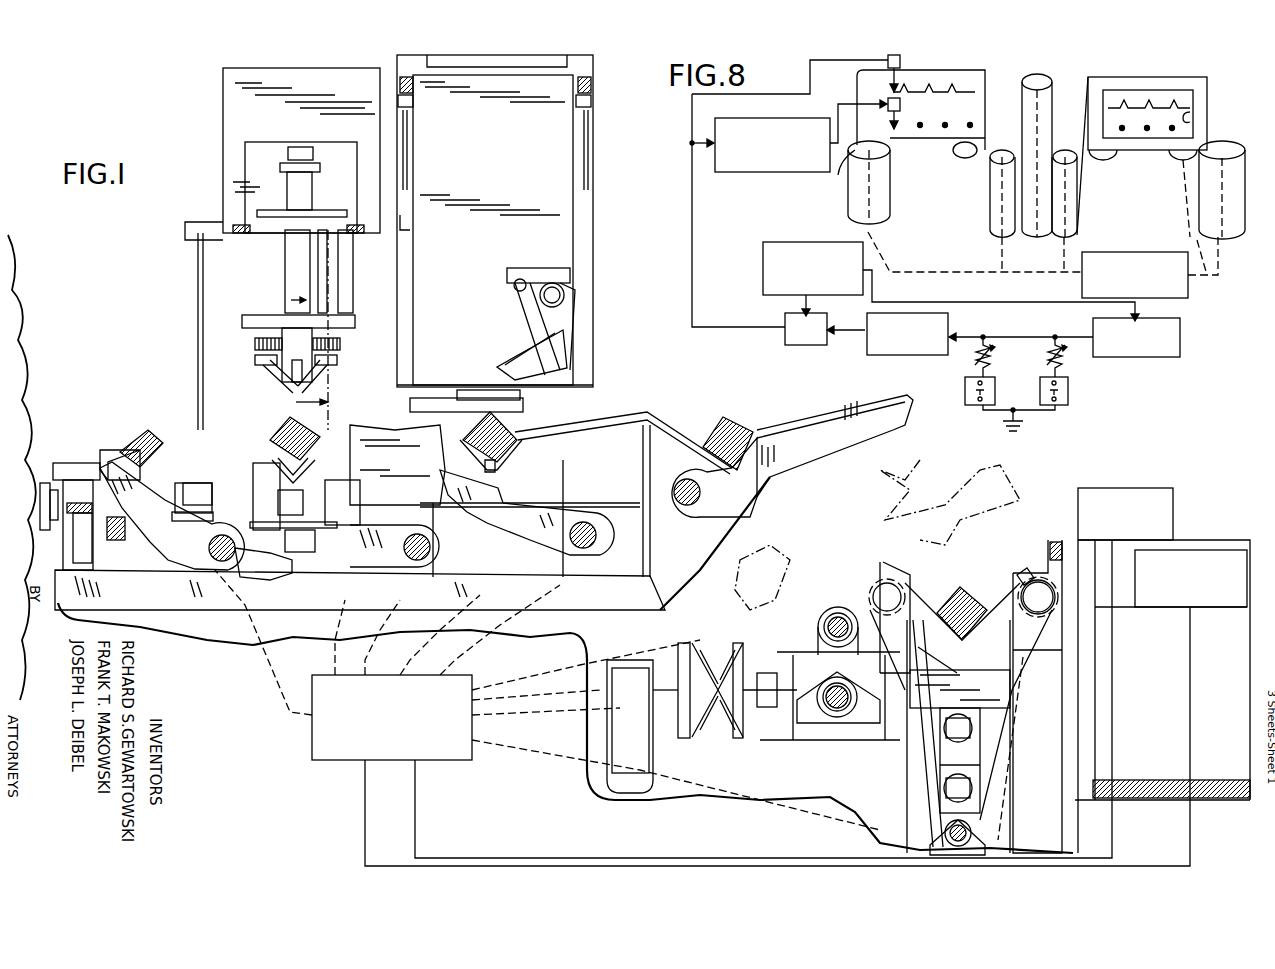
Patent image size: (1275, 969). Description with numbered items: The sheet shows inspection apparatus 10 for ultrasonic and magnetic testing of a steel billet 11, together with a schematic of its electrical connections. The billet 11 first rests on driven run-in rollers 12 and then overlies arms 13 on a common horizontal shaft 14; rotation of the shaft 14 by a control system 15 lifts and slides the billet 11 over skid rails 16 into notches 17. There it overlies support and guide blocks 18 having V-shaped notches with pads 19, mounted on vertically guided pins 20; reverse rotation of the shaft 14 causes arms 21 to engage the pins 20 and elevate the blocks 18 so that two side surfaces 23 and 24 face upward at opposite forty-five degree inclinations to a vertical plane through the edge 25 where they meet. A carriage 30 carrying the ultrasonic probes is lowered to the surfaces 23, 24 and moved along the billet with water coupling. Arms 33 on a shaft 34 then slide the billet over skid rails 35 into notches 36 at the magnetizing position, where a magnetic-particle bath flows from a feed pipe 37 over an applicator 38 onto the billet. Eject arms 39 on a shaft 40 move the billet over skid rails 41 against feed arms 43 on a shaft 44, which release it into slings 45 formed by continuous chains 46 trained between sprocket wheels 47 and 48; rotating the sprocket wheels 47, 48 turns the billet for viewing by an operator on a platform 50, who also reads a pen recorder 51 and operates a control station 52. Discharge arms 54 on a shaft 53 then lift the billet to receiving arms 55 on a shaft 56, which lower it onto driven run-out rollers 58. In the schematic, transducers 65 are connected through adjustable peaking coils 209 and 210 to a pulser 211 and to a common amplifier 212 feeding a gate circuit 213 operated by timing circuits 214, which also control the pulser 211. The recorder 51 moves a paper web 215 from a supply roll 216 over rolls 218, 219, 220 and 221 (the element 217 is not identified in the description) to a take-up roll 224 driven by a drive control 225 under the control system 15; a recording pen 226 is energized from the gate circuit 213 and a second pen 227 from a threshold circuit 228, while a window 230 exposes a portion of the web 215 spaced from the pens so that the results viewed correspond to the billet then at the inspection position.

In FIG. 1, the inspection apparatus 10 is at (126, 297).
In FIG. 1, the billet 11 is at (140, 438).
In FIG. 1, the run-in rollers 12 is at (112, 442).
In FIG. 1, the arms 13 is at (226, 450).
In FIG. 1, the horizontal shaft 14 is at (215, 562).
In FIG. 1, the control system 15 is at (312, 720).
In FIG. 1, the skid rails 16 is at (185, 440).
In FIG. 1, the notches 17 is at (350, 432).
In FIG. 1, the support and guide blocks 18 is at (250, 478).
In FIG. 1, the pads 19 is at (340, 462).
In FIG. 1, the pins 20 is at (280, 508).
In FIG. 1, the arms 21 is at (272, 572).
In FIG. 1, the side surface 23 is at (292, 440).
In FIG. 1, the side surface 24 is at (302, 443).
In FIG. 1, the edge 25 is at (340, 397).
In FIG. 1, the carriage 30 is at (255, 368).
In FIG. 1, the arms 33 is at (445, 392).
In FIG. 1, the shaft 34 is at (420, 560).
In FIG. 1, the skid rails 35 is at (395, 432).
In FIG. 1, the notches 36 is at (500, 448).
In FIG. 1, the feed pipe 37 is at (565, 300).
In FIG. 1, the applicator 38 is at (573, 345).
In FIG. 1, the eject arms 39 is at (512, 528).
In FIG. 1, the shaft 40 is at (598, 525).
In FIG. 1, the skid rails 41 is at (563, 422).
In FIG. 1, the feed arms 43 is at (820, 432).
In FIG. 1, the shaft 44 is at (680, 510).
In FIG. 1, the slings 45 is at (972, 558).
In FIG. 1, the continuous chains 46 is at (998, 598).
In FIG. 1, the sprocket wheels 47 is at (900, 578).
In FIG. 1, the sprocket wheels 48 is at (1040, 578).
In FIG. 1, the platform 50 is at (1150, 780).
In FIG. 8, the pen recorder 51 is at (1215, 93).
In FIG. 1, the pen recorder 51 is at (1200, 560).
In FIG. 1, the control station 52 is at (1130, 488).
In FIG. 1, the shaft 53 is at (838, 607).
In FIG. 1, the discharge arms 54 is at (970, 485).
In FIG. 1, the receiving arms 55 is at (775, 575).
In FIG. 1, the shaft 56 is at (848, 718).
In FIG. 1, the run-out rollers 58 is at (688, 738).
In FIG. 8, the transducers 65 is at (995, 388).
In FIG. 8, the adjustable peaking coil 209 is at (1005, 356).
In FIG. 8, the adjustable peaking coil 210 is at (1065, 362).
In FIG. 8, the pulser 211 is at (1180, 353).
In FIG. 8, the amplifier 212 is at (960, 322).
In FIG. 8, the gate circuit 213 is at (808, 345).
In FIG. 8, the timing circuits 214 is at (806, 242).
In FIG. 8, the paper web 215 is at (921, 119).
In FIG. 8, the supply roll 216 is at (878, 226).
In FIG. 8, the tape guide 217 is at (848, 172).
In FIG. 8, the roll 218 is at (963, 160).
In FIG. 8, the roll 219 is at (992, 230).
In FIG. 8, the roll 220 is at (1030, 160).
In FIG. 8, the roll 221 is at (1078, 234).
In FIG. 8, the take-up roll 224 is at (1238, 240).
In FIG. 8, the drive control 225 is at (1165, 294).
In FIG. 8, the recording pen 226 is at (900, 61).
In FIG. 8, the second pen 227 is at (886, 102).
In FIG. 8, the threshold circuit 228 is at (740, 172).
In FIG. 8, the window 230 is at (1192, 116).